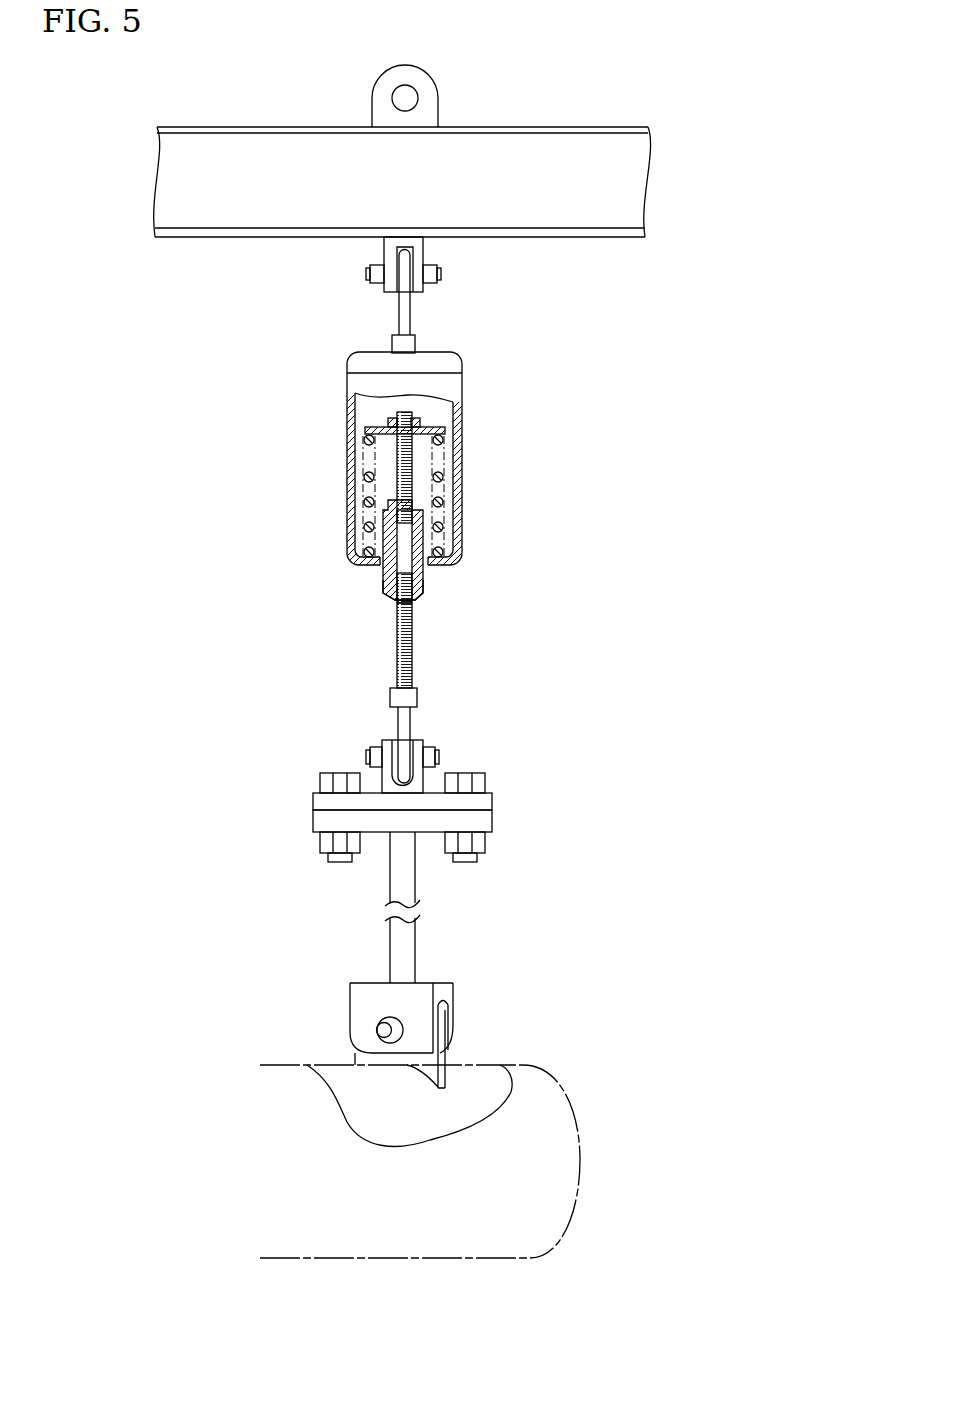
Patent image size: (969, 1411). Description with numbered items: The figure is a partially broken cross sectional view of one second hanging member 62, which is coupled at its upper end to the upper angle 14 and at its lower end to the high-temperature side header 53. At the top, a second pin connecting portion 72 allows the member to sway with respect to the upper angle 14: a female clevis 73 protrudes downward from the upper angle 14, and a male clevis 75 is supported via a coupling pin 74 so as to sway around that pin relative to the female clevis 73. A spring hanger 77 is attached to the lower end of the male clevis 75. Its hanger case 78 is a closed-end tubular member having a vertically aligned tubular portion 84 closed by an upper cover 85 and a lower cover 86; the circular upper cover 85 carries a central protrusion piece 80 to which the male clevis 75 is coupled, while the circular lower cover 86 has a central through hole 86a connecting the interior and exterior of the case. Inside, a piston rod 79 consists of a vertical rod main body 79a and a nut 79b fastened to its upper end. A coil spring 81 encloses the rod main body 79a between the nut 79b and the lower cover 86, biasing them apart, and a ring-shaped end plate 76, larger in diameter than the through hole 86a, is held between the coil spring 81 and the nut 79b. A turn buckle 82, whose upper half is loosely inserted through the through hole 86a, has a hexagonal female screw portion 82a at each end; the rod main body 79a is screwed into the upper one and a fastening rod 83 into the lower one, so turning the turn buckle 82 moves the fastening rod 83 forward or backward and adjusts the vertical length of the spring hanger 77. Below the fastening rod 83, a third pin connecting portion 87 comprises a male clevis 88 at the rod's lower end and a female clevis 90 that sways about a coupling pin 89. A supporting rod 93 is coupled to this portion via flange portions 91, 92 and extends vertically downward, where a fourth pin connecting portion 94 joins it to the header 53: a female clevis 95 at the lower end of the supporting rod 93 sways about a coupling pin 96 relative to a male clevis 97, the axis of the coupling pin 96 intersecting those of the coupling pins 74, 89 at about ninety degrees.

The upper angle 14 is at (584, 150).
The high-temperature side header 53 is at (363, 1120).
The second hanging member 62 is at (411, 492).
The second pin connecting portion 72 is at (424, 288).
The female clevis 73 is at (417, 253).
The coupling pin 74 is at (372, 272).
The male clevis 75 is at (410, 316).
The end plate 76 is at (366, 430).
The spring hanger 77 is at (439, 500).
The hanger case 78 is at (439, 500).
The piston rod 79 is at (342, 496).
The rod main body 79a is at (390, 490).
The nut 79b is at (390, 418).
The protrusion piece 80 is at (415, 343).
The coil spring 81 is at (364, 441).
The turn buckle 82 is at (442, 539).
The female screw portion 82a is at (413, 495).
The fastening rod 83 is at (412, 648).
The tubular portion 84 is at (458, 416).
The upper cover 85 is at (366, 345).
The lower cover 86 is at (422, 560).
The through hole 86a is at (382, 574).
The third pin connecting portion 87 is at (432, 737).
The male clevis 88 is at (397, 728).
The coupling pin 89 is at (437, 757).
The female clevis 90 is at (387, 778).
The flange portion 91 is at (483, 805).
The flange portion 92 is at (483, 825).
The supporting rod 93 is at (410, 890).
The fourth pin connecting portion 94 is at (444, 1012).
The female clevis 95 is at (450, 990).
The coupling pin 96 is at (376, 1030).
The male clevis 97 is at (436, 1048).